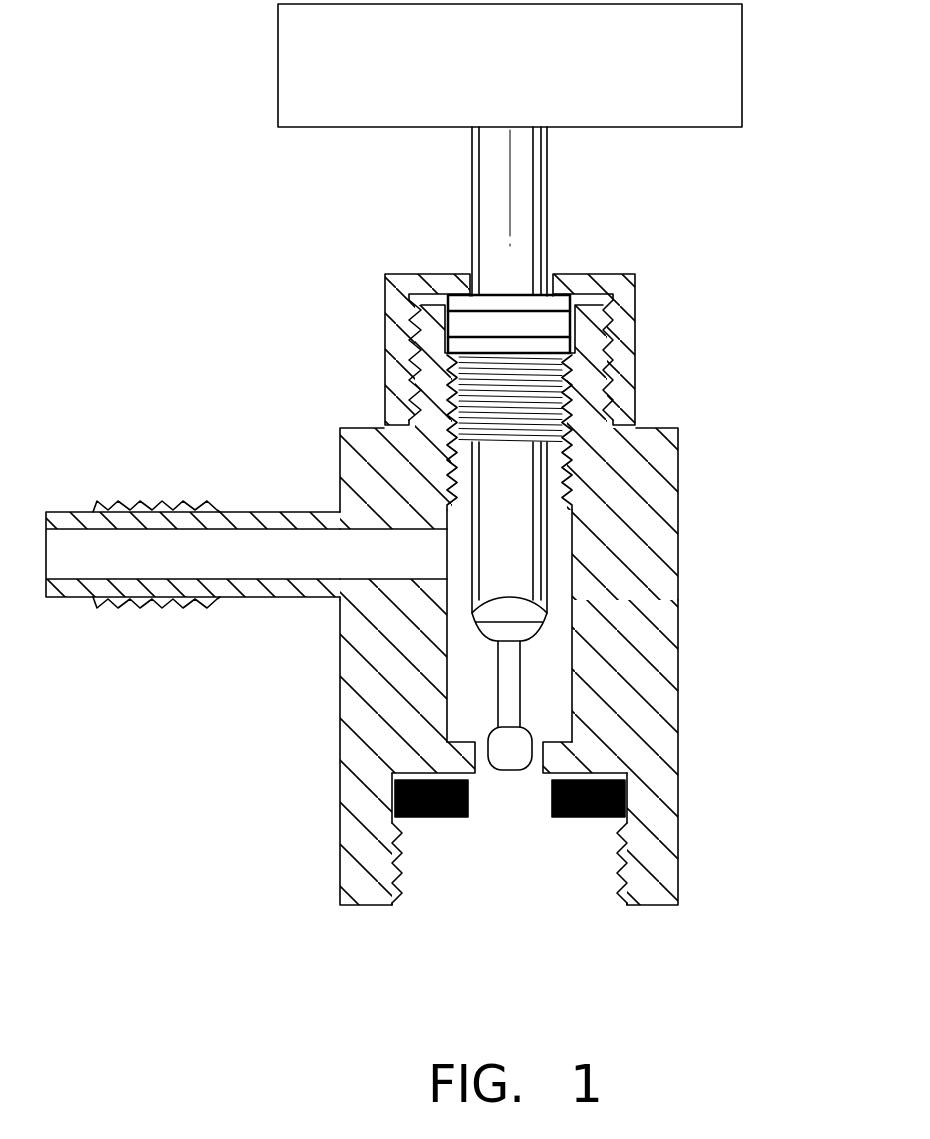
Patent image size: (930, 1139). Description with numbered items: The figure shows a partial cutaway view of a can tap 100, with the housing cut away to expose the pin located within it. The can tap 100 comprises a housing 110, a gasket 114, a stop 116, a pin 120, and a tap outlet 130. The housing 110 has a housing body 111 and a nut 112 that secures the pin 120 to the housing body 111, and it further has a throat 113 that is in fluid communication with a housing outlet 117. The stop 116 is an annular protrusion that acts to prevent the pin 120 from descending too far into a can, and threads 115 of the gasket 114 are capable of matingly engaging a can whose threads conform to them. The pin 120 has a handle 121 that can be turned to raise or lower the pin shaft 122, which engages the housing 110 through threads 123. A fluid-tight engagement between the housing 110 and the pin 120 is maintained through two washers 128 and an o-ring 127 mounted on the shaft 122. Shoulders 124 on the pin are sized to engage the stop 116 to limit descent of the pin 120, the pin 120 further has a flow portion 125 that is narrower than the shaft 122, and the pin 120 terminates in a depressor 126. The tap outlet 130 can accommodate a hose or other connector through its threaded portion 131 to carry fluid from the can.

The can tap 100 is at (180, 253).
The housing 110 is at (343, 427).
The housing body 111 is at (343, 639).
The nut 112 is at (383, 299).
The throat 113 is at (447, 690).
The gasket 114 is at (596, 818).
The threads 115 is at (398, 890).
The stop 116 is at (473, 757).
The housing outlet 117 is at (360, 522).
The pin 120 is at (452, 224).
The handle 121 is at (742, 49).
The pin shaft 122 is at (548, 194).
The threads 123 is at (568, 452).
The shoulders 124 is at (538, 630).
The flow portion 125 is at (522, 690).
The depressor 126 is at (513, 771).
The o-ring 127 is at (636, 324).
The washers 128 is at (636, 303).
The tap outlet 130 is at (96, 503).
The threaded portion 131 is at (97, 608).